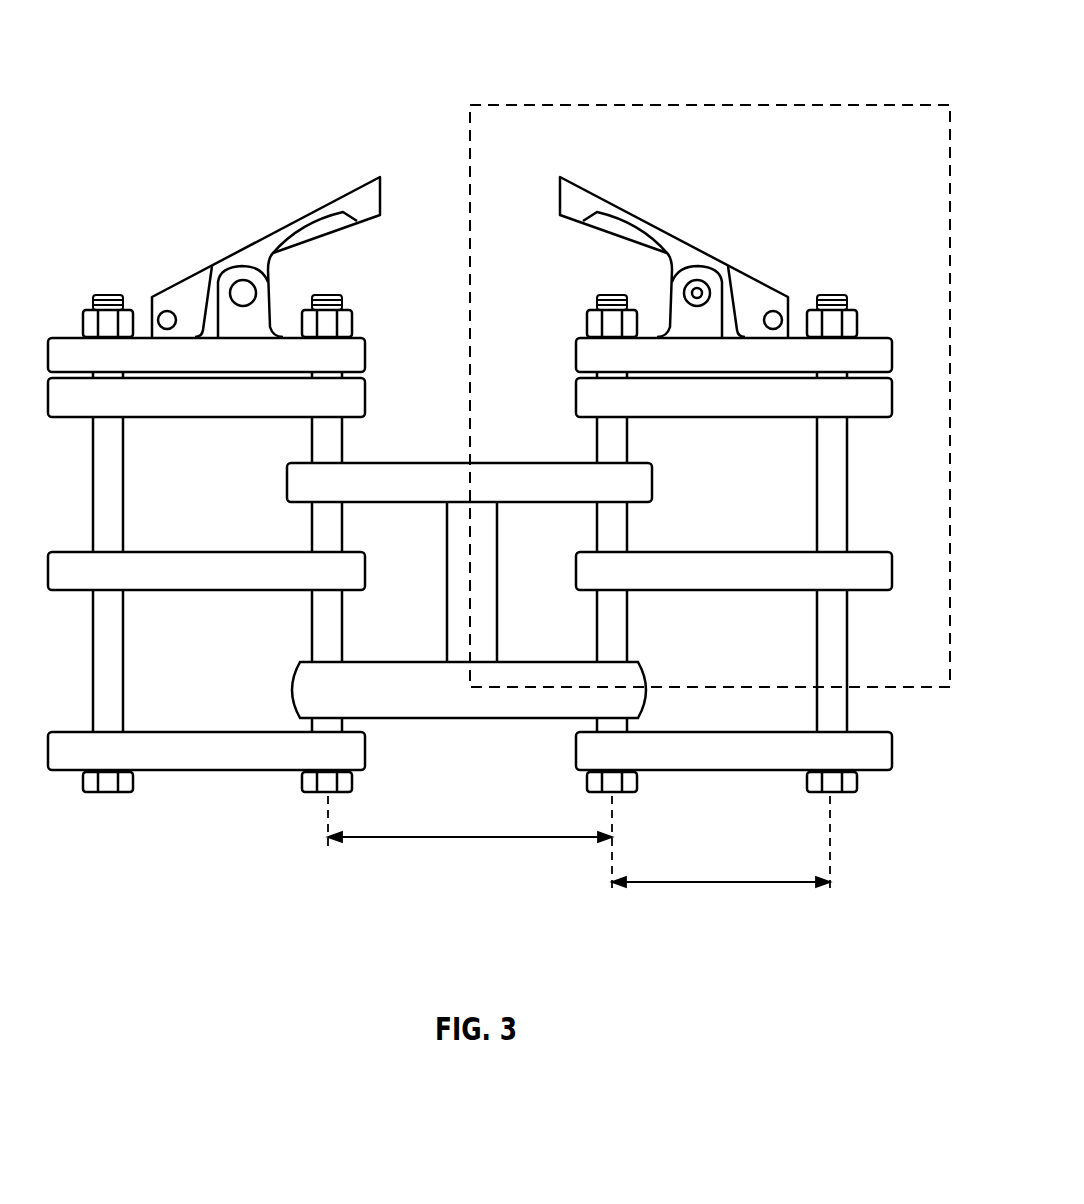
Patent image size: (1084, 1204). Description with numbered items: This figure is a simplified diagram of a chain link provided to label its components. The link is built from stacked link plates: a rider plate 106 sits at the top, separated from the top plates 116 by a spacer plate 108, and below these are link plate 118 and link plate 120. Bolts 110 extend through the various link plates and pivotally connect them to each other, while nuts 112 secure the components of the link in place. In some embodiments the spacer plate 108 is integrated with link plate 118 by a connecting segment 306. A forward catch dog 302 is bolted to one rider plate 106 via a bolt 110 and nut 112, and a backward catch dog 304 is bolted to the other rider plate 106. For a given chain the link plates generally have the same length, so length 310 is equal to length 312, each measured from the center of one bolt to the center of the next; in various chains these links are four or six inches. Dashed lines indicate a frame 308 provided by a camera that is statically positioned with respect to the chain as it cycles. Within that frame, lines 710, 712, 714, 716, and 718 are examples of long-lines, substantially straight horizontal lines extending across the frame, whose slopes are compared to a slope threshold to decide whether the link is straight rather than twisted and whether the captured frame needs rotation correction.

The rider plate 106 is at (231, 408).
The spacer plate 108 is at (454, 498).
The bolt 110 is at (325, 296).
The nut 112 is at (128, 317).
The top plate 116 is at (231, 588).
The link plate 118 is at (454, 707).
The link plate 120 is at (231, 768).
The forward catch dog 302 is at (56, 352).
The backward catch dog 304 is at (647, 228).
The connecting segment 306 is at (447, 594).
The frame 308 is at (699, 100).
The length 310 is at (455, 839).
The length 312 is at (730, 884).
The line 710 is at (751, 426).
The line 712 is at (577, 379).
The line 714 is at (578, 373).
The line 716 is at (504, 462).
The line 718 is at (724, 551).